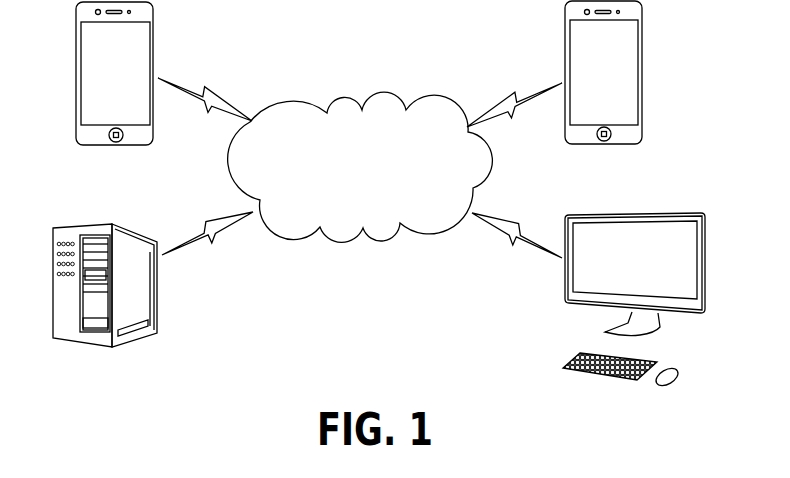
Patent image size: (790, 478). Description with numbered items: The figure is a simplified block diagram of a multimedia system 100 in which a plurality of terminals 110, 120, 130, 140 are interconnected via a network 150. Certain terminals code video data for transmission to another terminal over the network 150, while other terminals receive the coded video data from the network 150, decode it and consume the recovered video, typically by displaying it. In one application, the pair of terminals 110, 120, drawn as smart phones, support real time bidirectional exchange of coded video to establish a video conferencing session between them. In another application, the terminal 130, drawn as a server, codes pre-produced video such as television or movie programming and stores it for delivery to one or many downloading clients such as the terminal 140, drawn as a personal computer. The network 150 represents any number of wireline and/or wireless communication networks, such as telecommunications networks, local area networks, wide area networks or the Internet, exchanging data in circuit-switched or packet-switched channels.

The multimedia system 100 is at (379, 219).
The terminal 110 is at (100, 193).
The terminal 120 is at (591, 195).
The terminal 130 is at (89, 406).
The terminal 140 is at (607, 436).
The network 150 is at (347, 186).